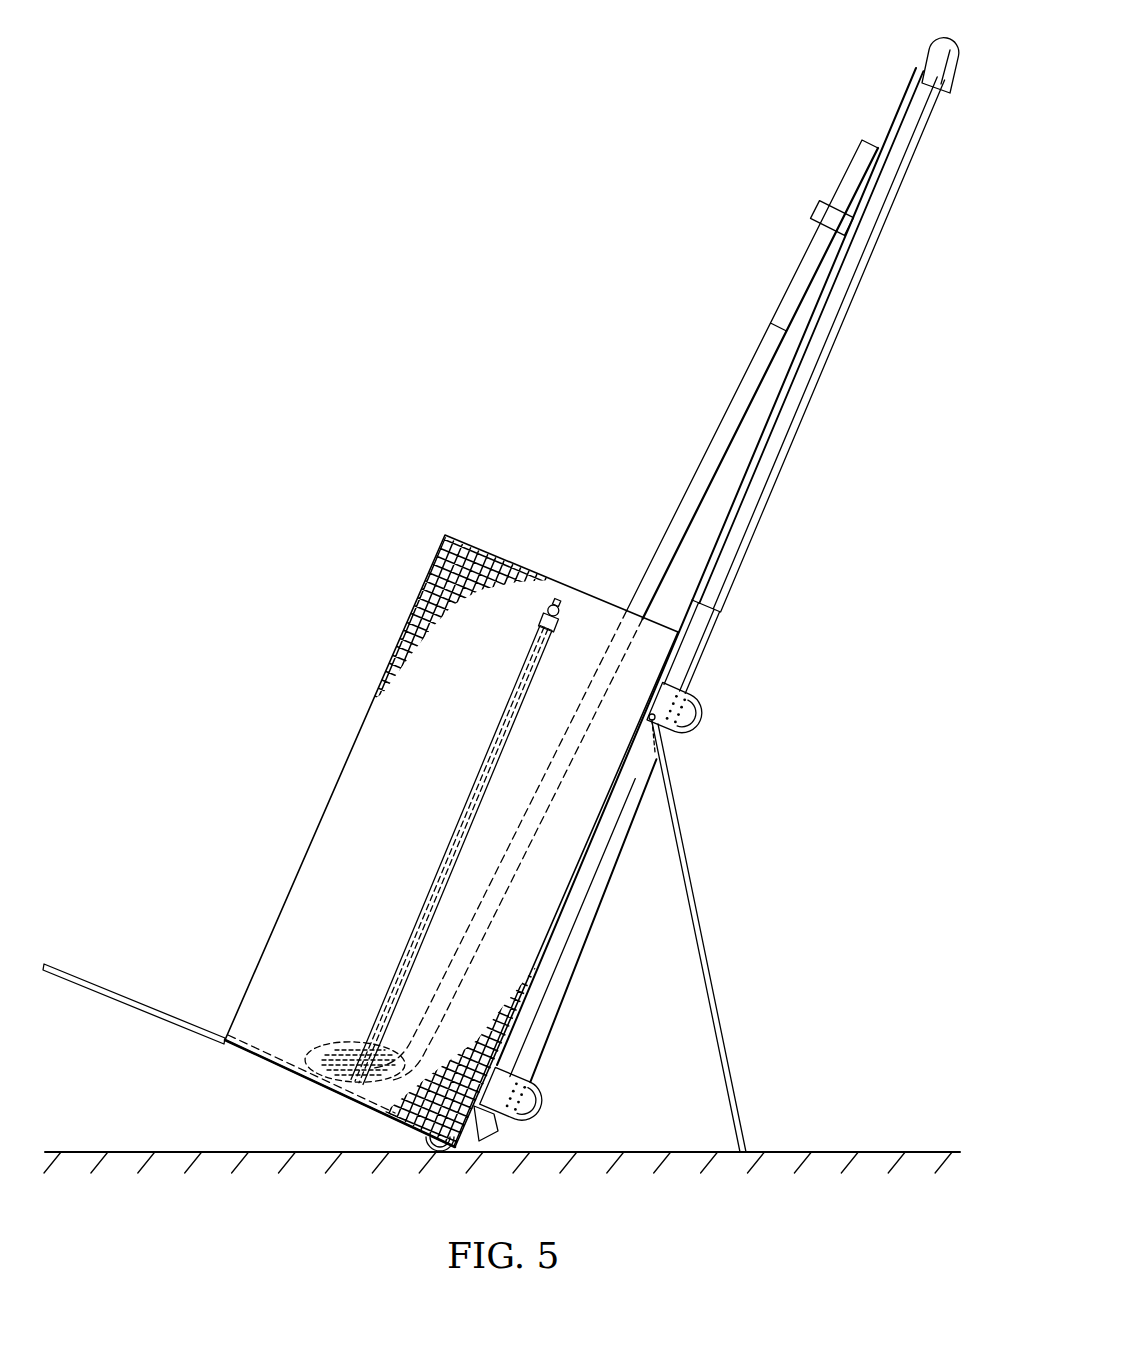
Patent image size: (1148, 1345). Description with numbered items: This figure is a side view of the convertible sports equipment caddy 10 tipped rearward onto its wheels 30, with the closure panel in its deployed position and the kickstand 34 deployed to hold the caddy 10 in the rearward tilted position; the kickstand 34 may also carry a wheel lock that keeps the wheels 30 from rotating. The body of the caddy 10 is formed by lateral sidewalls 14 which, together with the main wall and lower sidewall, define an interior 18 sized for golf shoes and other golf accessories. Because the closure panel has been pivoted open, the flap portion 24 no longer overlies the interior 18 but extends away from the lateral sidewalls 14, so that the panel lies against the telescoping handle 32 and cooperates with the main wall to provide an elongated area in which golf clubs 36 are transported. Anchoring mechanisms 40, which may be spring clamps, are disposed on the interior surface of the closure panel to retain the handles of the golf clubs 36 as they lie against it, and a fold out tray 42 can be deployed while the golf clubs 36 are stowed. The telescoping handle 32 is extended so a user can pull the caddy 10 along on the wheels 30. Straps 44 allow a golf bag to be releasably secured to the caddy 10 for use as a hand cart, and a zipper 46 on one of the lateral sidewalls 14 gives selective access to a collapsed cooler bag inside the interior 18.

The convertible sports equipment caddy 10 is at (211, 121).
The lateral sidewalls 14 is at (367, 778).
The interior 18 is at (322, 874).
The flap portion 24 is at (897, 115).
The wheels 30 is at (415, 1152).
The telescoping handle 32 is at (914, 45).
The kickstand 34 is at (705, 940).
The golf clubs 36 is at (724, 412).
The anchoring mechanisms 40 is at (817, 215).
The fold out tray 42 is at (128, 1000).
The straps 44 is at (700, 722).
The zipper 46 is at (472, 772).